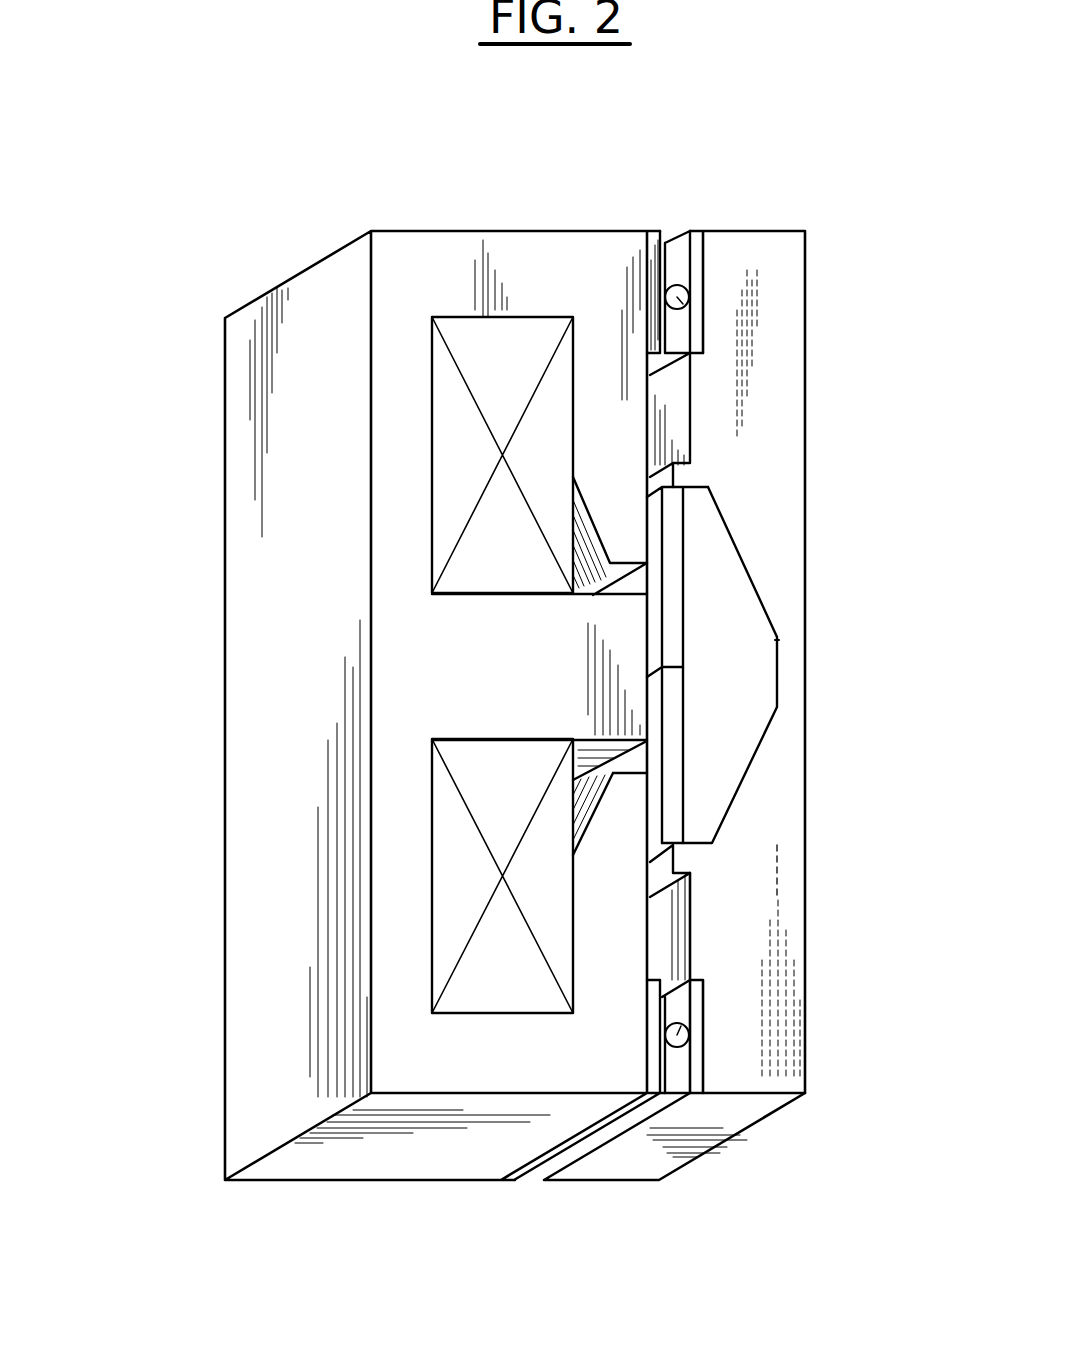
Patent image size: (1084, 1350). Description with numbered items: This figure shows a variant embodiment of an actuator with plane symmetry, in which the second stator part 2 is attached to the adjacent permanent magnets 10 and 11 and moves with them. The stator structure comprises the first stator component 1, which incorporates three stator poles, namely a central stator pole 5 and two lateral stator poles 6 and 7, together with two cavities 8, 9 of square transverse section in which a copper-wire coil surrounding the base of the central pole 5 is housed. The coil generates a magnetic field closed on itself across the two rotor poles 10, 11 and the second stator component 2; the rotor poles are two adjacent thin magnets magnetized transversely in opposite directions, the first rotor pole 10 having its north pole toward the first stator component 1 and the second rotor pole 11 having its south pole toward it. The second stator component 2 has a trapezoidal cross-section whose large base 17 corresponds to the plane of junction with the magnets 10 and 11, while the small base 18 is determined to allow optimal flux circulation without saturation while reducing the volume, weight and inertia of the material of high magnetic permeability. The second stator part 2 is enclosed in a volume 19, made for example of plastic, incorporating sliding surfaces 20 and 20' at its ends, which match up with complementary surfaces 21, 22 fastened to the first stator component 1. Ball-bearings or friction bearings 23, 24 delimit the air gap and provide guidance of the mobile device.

The first stator component 1 is at (208, 706).
The second stator component 2 is at (725, 587).
The central stator pole 5 is at (525, 657).
The lateral stator pole 6 is at (598, 445).
The lateral stator pole 7 is at (592, 926).
The cavity 8 is at (447, 848).
The cavity 9 is at (478, 345).
The first rotor pole 10 is at (673, 535).
The second rotor pole 11 is at (672, 767).
The large base 17 is at (692, 681).
The small base 18 is at (779, 650).
The volume 19 is at (773, 375).
The sliding surface 20 is at (732, 310).
The sliding surface 20' is at (753, 1092).
The complementary surface 21 is at (652, 265).
The complementary surface 22 is at (650, 1068).
The bearing 23 is at (685, 1012).
The bearing 24 is at (690, 311).